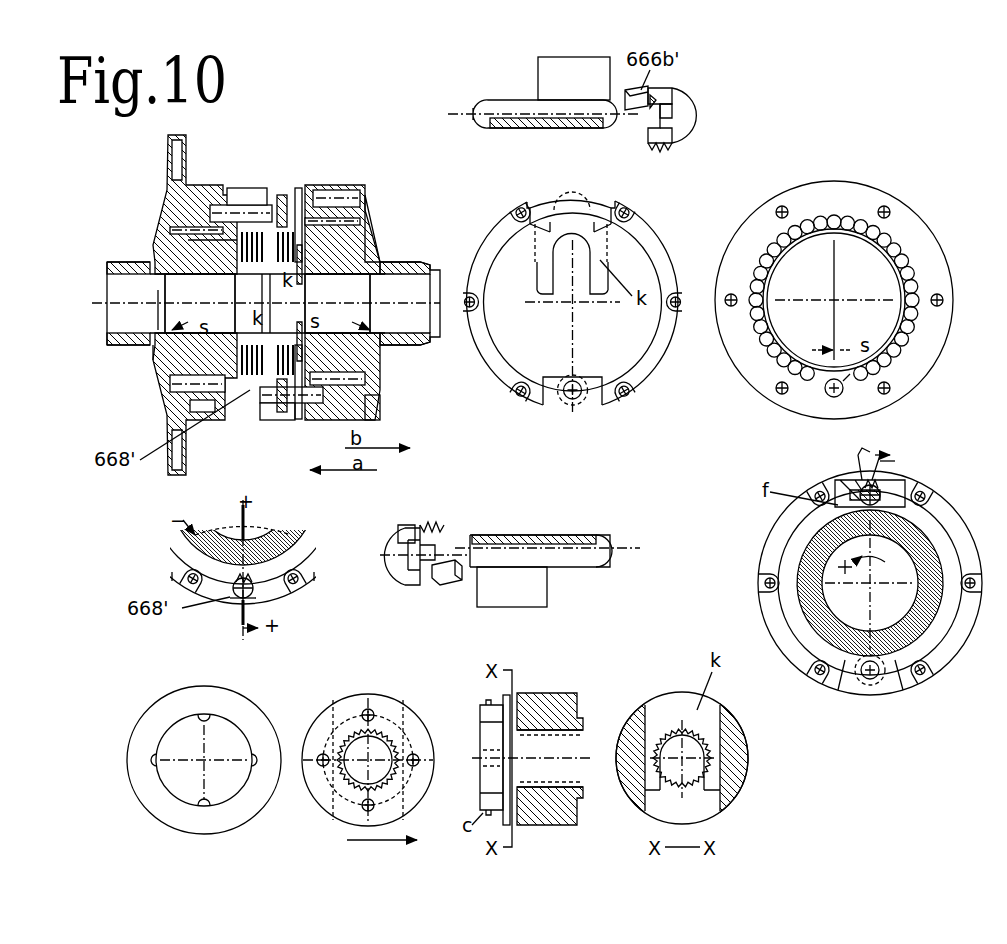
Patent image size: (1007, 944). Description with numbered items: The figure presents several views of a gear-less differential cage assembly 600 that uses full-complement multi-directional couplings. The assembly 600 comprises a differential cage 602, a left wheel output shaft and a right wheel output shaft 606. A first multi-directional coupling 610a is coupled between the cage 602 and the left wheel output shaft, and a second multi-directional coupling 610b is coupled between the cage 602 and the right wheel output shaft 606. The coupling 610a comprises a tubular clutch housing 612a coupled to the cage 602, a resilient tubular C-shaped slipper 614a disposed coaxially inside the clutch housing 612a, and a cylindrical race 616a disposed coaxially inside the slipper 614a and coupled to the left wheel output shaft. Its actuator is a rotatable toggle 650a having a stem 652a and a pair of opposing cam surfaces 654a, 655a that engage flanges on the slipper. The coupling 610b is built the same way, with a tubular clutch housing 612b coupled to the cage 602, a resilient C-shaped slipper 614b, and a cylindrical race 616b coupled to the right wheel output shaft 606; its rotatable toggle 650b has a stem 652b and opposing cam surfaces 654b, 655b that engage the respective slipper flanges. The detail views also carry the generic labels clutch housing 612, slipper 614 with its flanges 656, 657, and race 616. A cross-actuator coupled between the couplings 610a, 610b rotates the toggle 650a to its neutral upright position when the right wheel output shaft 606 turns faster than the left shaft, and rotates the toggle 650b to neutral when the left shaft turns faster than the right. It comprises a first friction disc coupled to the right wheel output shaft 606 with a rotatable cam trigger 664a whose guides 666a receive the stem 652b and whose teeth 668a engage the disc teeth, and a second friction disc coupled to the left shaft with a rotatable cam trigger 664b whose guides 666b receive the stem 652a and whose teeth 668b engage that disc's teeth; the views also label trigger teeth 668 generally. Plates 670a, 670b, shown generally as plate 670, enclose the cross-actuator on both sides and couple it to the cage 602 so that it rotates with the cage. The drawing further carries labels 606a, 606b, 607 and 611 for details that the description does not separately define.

The differential cage assembly 600 is at (95, 322).
The differential cage 602 is at (168, 183).
The right wheel output shaft 606 is at (398, 262).
The housing ring a 606a is at (372, 410).
The housing ring b 606b is at (200, 407).
The ring 607 is at (232, 330).
The first multi-directional coupling 610a is at (158, 352).
The second multi-directional coupling 610b is at (382, 342).
The coupling assembly 611 is at (292, 138).
The bearing ring 612 is at (820, 185).
The tubular clutch housing 612a is at (190, 228).
The tubular clutch housing 612b is at (315, 420).
The ball bearing 614 is at (850, 218).
The resilient tubular C-shaped slipper 614a is at (190, 384).
The resilient tubular C-shaped slipper 614b is at (392, 172).
The hub 616 is at (560, 712).
The cylindrical race 616a is at (190, 262).
The cylindrical race 616b is at (372, 235).
The rotatable toggle 650a is at (258, 190).
The rotatable toggle 650b is at (283, 400).
The stem 652a is at (562, 88).
The stem 652b is at (243, 612).
The cam surface 654a is at (468, 112).
The cam surface 654b is at (590, 538).
The cam surface 655a is at (503, 127).
The cam surface 655b is at (615, 545).
The pin 656 is at (822, 383).
The pin seat 657 is at (845, 383).
The rotatable cam trigger 664a is at (400, 580).
The rotatable cam trigger 664b is at (690, 112).
The guides 666a is at (420, 585).
The guides 666b is at (668, 107).
The spring plate 668 is at (282, 196).
The teeth 668a is at (426, 528).
The teeth 668b is at (668, 142).
The cover ring 670 is at (632, 225).
The plate 670a is at (237, 407).
The plate 670b is at (300, 196).